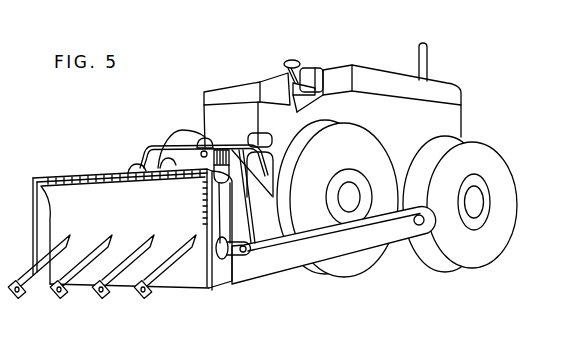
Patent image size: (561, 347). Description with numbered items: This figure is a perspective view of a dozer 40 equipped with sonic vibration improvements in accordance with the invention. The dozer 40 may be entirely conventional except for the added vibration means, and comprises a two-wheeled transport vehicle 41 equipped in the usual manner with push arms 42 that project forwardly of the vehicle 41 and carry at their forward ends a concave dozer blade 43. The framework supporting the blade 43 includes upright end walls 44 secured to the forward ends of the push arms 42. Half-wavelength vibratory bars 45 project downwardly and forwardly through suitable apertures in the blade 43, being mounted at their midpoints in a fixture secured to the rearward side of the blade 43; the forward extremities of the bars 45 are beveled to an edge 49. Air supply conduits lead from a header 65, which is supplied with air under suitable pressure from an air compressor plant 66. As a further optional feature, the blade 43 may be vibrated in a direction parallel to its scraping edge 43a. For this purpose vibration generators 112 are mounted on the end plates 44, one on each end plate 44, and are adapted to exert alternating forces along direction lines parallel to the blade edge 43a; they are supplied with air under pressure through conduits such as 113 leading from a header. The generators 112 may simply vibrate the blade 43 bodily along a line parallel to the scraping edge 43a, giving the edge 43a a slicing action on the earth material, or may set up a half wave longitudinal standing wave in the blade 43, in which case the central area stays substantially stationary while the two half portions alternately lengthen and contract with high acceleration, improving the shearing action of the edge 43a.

The dozer 40 is at (229, 86).
The two-wheeled transport vehicle 41 is at (462, 114).
The push arms 42 is at (390, 238).
The dozer blade 43 is at (72, 186).
The scraping edge 43a is at (185, 290).
The upright end walls 44 is at (228, 282).
The half-wavelength vibratory bars 45 is at (141, 235).
The edge 49 is at (52, 298).
The header 65 is at (150, 150).
The air compressor plant 66 is at (202, 138).
The vibration generators 112 is at (245, 254).
The conduits 113 is at (267, 238).